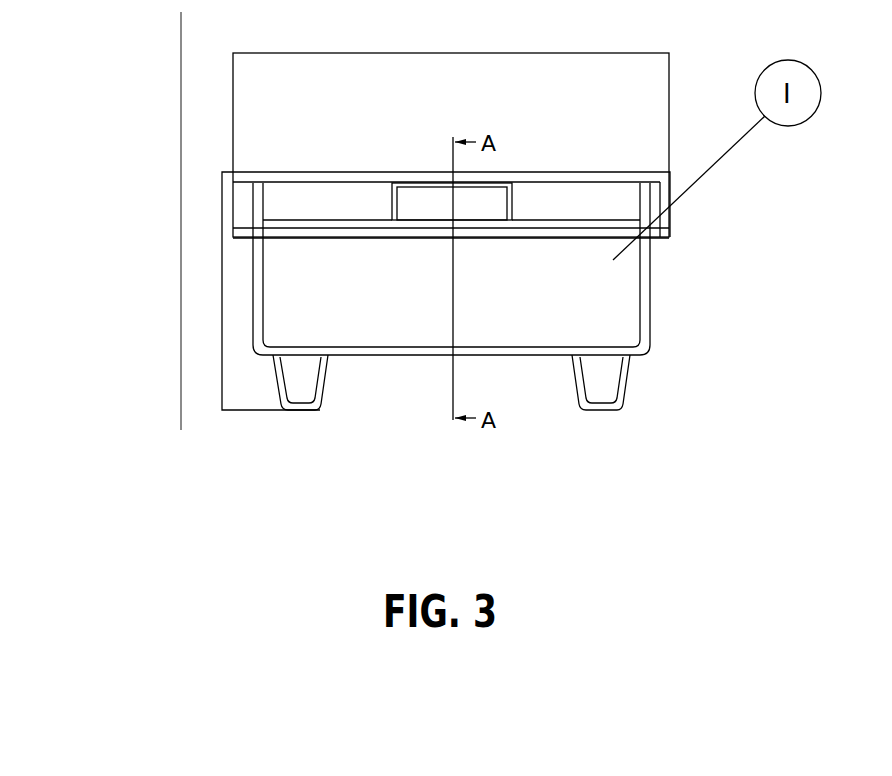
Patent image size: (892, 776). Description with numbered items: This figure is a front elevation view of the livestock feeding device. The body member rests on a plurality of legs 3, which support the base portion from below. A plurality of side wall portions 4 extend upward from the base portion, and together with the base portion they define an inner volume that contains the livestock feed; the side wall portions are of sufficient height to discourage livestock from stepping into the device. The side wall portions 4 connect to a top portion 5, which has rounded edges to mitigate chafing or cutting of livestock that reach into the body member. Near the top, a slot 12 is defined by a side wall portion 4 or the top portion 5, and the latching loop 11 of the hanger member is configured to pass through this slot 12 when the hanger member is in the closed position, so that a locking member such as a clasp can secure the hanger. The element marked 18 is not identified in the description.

The legs 3 is at (528, 398).
The side wall portions 4 is at (370, 291).
The top portion 5 is at (358, 291).
The latching loop 11 is at (451, 145).
The slot 12 is at (451, 332).
The lid lip 18 is at (353, 243).